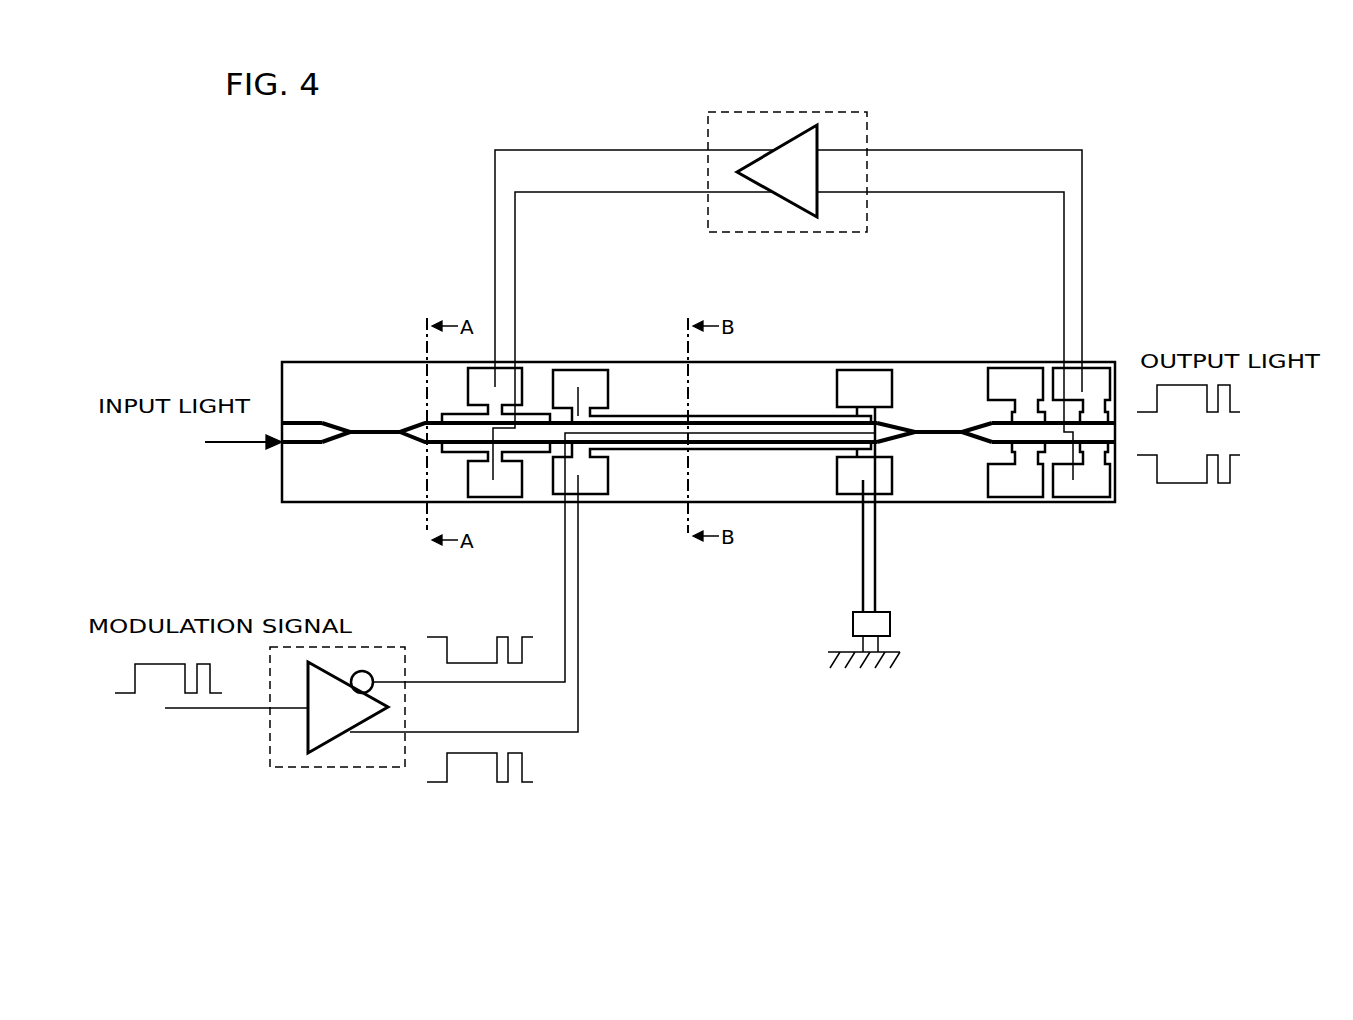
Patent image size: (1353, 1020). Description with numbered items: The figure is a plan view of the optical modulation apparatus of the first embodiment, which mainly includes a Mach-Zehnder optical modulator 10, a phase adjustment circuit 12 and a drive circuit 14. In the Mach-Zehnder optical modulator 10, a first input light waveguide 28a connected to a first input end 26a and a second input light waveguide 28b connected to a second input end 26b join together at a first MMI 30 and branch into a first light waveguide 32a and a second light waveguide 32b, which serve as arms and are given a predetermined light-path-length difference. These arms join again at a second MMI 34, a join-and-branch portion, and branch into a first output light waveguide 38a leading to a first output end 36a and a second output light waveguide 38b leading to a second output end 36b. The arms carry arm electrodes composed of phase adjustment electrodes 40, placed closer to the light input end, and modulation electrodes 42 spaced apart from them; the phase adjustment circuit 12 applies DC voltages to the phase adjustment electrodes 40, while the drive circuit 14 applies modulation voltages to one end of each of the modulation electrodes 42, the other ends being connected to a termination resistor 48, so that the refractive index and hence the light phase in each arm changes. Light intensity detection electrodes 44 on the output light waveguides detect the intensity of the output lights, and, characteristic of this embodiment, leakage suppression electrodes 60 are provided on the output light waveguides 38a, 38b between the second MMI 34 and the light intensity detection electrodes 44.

The Mach-Zehnder optical modulator 10 is at (758, 506).
The phase adjustment circuit 12 is at (786, 110).
The drive circuit 14 is at (337, 768).
The first input end 26a is at (282, 445).
The second input end 26b is at (282, 422).
The first input light waveguide 28a is at (322, 445).
The second input light waveguide 28b is at (324, 420).
The first MMI 30 is at (372, 436).
The first light waveguide 32a is at (412, 445).
The second light waveguide 32b is at (412, 420).
The second MMI 34 is at (916, 428).
The first output end 36a is at (1117, 422).
The second output end 36b is at (1117, 445).
The first output light waveguide 38a is at (977, 427).
The second output light waveguide 38b is at (957, 445).
The phase adjustment electrodes 40 is at (537, 413).
The modulation electrodes 42 is at (640, 416).
The light intensity detection electrodes 44 is at (1075, 395).
The termination resistor 48 is at (891, 623).
The leakage suppression electrodes 60 is at (1008, 395).